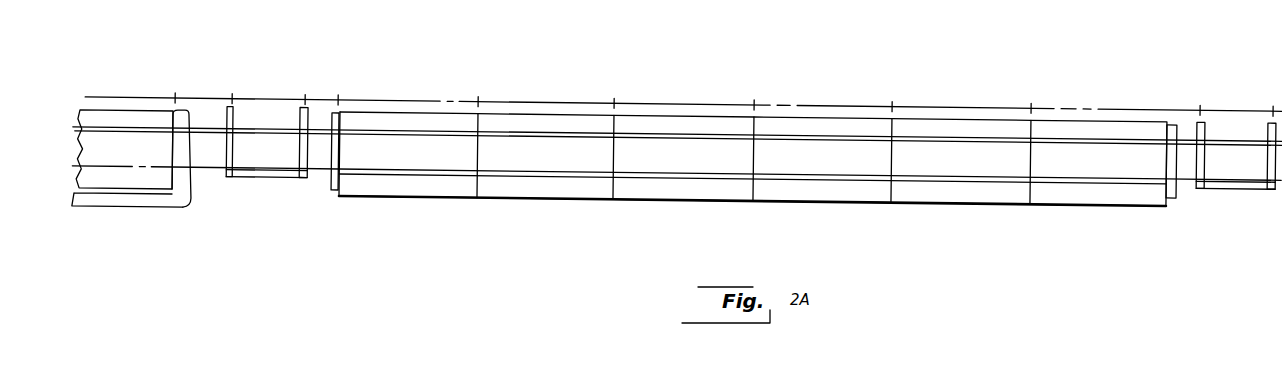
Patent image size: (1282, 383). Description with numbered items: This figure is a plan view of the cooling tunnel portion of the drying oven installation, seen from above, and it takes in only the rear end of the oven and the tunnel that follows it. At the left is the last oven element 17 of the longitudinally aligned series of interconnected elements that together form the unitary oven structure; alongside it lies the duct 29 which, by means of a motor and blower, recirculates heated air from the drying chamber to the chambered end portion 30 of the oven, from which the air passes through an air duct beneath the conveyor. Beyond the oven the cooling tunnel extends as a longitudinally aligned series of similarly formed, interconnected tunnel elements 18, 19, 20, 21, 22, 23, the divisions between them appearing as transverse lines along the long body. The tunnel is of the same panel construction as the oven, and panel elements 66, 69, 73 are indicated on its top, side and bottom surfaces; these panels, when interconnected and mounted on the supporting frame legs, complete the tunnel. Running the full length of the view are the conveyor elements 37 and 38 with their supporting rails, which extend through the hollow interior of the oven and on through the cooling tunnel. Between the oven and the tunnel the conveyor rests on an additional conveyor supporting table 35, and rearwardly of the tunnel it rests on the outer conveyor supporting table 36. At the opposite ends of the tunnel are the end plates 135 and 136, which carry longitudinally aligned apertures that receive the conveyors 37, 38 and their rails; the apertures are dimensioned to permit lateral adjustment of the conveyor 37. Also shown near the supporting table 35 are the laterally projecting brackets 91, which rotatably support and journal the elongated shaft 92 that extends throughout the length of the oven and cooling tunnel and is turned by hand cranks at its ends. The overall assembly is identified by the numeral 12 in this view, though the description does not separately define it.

The sausage casing / tubular body 12 is at (753, 156).
The oven element 17 is at (135, 117).
The tunnel element 18 is at (412, 120).
The tunnel element 19 is at (550, 120).
The tunnel element 20 is at (707, 123).
The tunnel element 21 is at (841, 127).
The tunnel element 22 is at (975, 129).
The tunnel element 23 is at (1130, 131).
The duct 29 is at (142, 205).
The chambered end portion 30 is at (185, 194).
The conveyor supporting table 35 is at (265, 179).
The outer conveyor supporting table 36 is at (1222, 174).
The conveyor 37 is at (318, 170).
The conveyor 38 is at (318, 136).
The panel element 66 is at (594, 114).
The panel element 69 is at (556, 186).
The panel element 73 is at (568, 167).
The laterally projecting bracket 91 is at (231, 108).
The elongated shaft 92 is at (276, 99).
The end plate 135 is at (334, 191).
The end plate 136 is at (1167, 197).